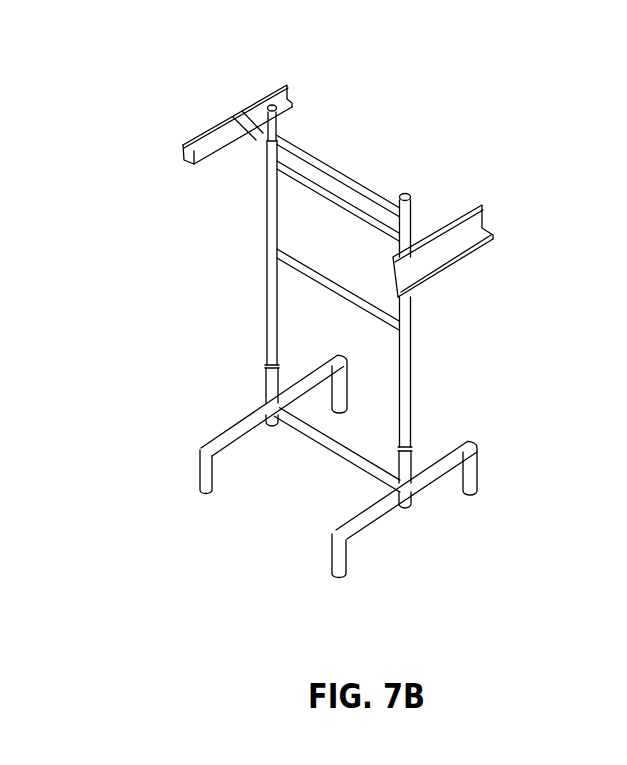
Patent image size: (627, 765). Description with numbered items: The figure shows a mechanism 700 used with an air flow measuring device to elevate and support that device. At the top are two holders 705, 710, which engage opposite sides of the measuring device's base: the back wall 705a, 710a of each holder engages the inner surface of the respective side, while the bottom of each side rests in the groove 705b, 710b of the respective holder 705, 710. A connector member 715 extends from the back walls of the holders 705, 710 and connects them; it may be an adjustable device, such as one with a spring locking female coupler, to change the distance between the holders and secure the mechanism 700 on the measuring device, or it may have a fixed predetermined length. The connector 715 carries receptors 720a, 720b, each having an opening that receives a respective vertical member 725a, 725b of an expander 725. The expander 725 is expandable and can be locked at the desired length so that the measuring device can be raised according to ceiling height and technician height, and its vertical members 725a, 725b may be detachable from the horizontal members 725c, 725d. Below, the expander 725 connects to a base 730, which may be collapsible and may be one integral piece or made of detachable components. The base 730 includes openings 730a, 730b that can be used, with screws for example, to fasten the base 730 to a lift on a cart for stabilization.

The mechanism 700 is at (421, 113).
The holder 705 is at (477, 235).
The back wall of holder 705a is at (472, 219).
The groove of holder 705b is at (447, 271).
The holder 710 is at (199, 120).
The back wall of holder 710a is at (233, 134).
The groove of holder 710b is at (190, 157).
The connector member 715 is at (325, 162).
The receptor 720a is at (405, 195).
The receptor 720b is at (273, 112).
The expander 725 is at (356, 324).
The vertical member 725a is at (410, 313).
The vertical member 725b is at (268, 160).
The horizontal member 725c is at (327, 205).
The horizontal member 725d is at (325, 272).
The base 730 is at (299, 467).
The opening of base 730a is at (202, 450).
The opening of base 730b is at (333, 532).